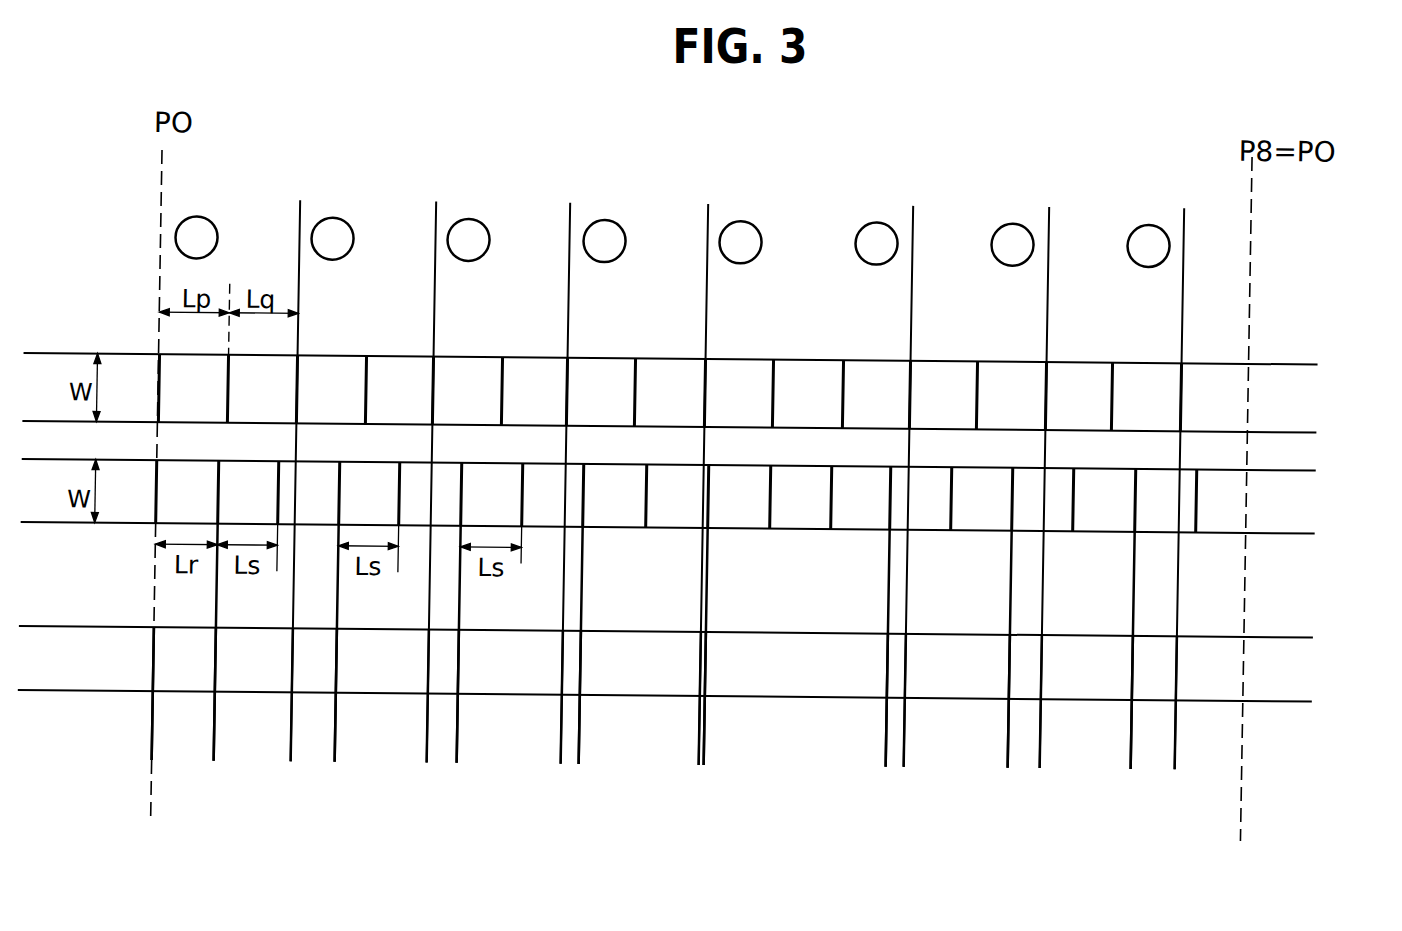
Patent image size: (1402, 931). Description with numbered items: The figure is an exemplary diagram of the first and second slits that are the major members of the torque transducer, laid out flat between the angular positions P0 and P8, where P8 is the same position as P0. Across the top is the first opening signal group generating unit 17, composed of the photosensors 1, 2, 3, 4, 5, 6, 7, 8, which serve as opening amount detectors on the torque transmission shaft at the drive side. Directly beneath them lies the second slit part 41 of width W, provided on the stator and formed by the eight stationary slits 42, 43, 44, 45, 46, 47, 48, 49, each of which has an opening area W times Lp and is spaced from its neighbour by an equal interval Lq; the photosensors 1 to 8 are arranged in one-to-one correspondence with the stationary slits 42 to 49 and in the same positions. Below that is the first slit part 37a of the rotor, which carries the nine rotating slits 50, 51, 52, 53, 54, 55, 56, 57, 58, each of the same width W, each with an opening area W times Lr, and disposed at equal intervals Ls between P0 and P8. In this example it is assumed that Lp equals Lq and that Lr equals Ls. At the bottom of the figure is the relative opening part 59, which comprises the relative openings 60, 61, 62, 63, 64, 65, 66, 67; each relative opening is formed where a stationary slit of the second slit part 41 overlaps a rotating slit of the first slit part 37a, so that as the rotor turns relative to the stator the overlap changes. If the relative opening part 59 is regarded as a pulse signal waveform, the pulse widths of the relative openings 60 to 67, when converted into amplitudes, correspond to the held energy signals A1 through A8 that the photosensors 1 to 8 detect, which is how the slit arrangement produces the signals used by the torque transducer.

The photosensor 1 is at (201, 223).
The photosensor 2 is at (337, 223).
The photosensor 3 is at (473, 223).
The photosensor 4 is at (609, 223).
The photosensor 5 is at (745, 223).
The photosensor 6 is at (881, 223).
The photosensor 7 is at (1017, 223).
The photosensor 8 is at (1150, 222).
The first opening signal group generating unit 17 is at (1273, 247).
The second slit part 41 is at (1273, 399).
The stationary slit 42 is at (162, 376).
The stationary slit 43 is at (335, 371).
The stationary slit 44 is at (452, 371).
The stationary slit 45 is at (604, 371).
The stationary slit 46 is at (744, 371).
The stationary slit 47 is at (870, 371).
The stationary slit 48 is at (1010, 367).
The stationary slit 49 is at (1147, 367).
The first slit part 37a is at (1273, 496).
The rotating slit 50 is at (195, 469).
The rotating slit 51 is at (320, 470).
The rotating slit 52 is at (440, 470).
The rotating slit 53 is at (560, 471).
The rotating slit 54 is at (680, 471).
The rotating slit 55 is at (795, 472).
The rotating slit 56 is at (924, 472).
The rotating slit 57 is at (1040, 472).
The rotating slit 58 is at (1165, 473).
The relative opening part 59 is at (1273, 667).
The relative opening 60 is at (208, 656).
The relative opening 61 is at (327, 656).
The relative opening 62 is at (452, 656).
The relative opening 63 is at (574, 656).
The relative opening 64 is at (707, 653).
The relative opening 65 is at (896, 653).
The relative opening 66 is at (1033, 653).
The relative opening 67 is at (1166, 653).